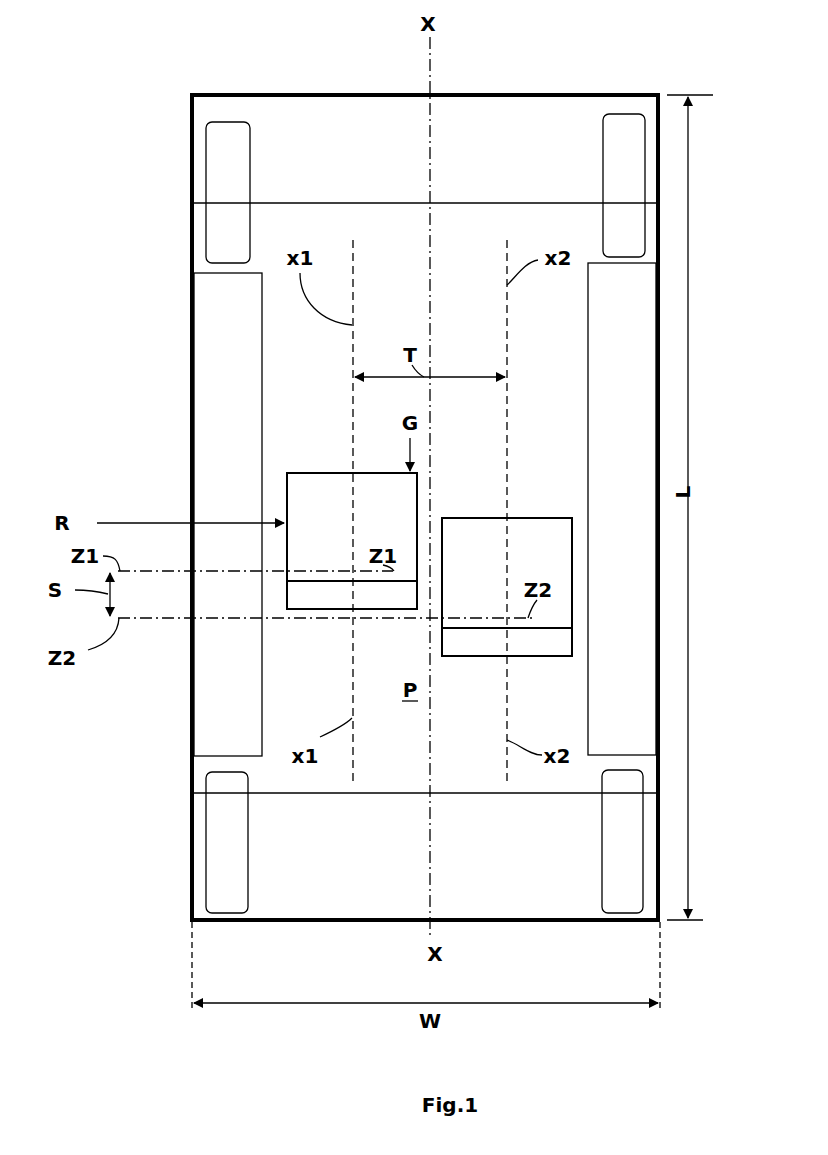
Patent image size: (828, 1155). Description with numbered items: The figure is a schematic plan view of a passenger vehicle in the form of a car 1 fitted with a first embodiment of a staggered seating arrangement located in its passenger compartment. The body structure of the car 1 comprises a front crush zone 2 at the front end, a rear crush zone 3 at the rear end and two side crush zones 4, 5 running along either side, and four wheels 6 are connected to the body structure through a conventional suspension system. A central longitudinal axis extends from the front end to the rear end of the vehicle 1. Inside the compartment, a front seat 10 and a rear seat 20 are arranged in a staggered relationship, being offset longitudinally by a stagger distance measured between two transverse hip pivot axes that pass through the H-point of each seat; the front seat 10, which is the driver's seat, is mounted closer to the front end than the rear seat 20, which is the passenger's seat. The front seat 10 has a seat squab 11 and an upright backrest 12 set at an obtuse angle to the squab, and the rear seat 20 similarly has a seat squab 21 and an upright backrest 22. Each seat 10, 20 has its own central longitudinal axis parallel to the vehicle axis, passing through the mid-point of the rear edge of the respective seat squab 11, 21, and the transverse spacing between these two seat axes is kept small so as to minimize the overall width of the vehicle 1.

The car 1 is at (191, 149).
The front crush zone 2 is at (332, 203).
The rear crush zone 3 is at (372, 794).
The side crush zone 4 is at (262, 384).
The side crush zone 5 is at (588, 386).
The wheels 6 is at (621, 115).
The front seat 10 is at (280, 487).
The seat squab 11 is at (318, 472).
The backrest 12 is at (335, 610).
The rear seat 20 is at (547, 514).
The seat squab 21 is at (485, 517).
The backrest 22 is at (518, 657).